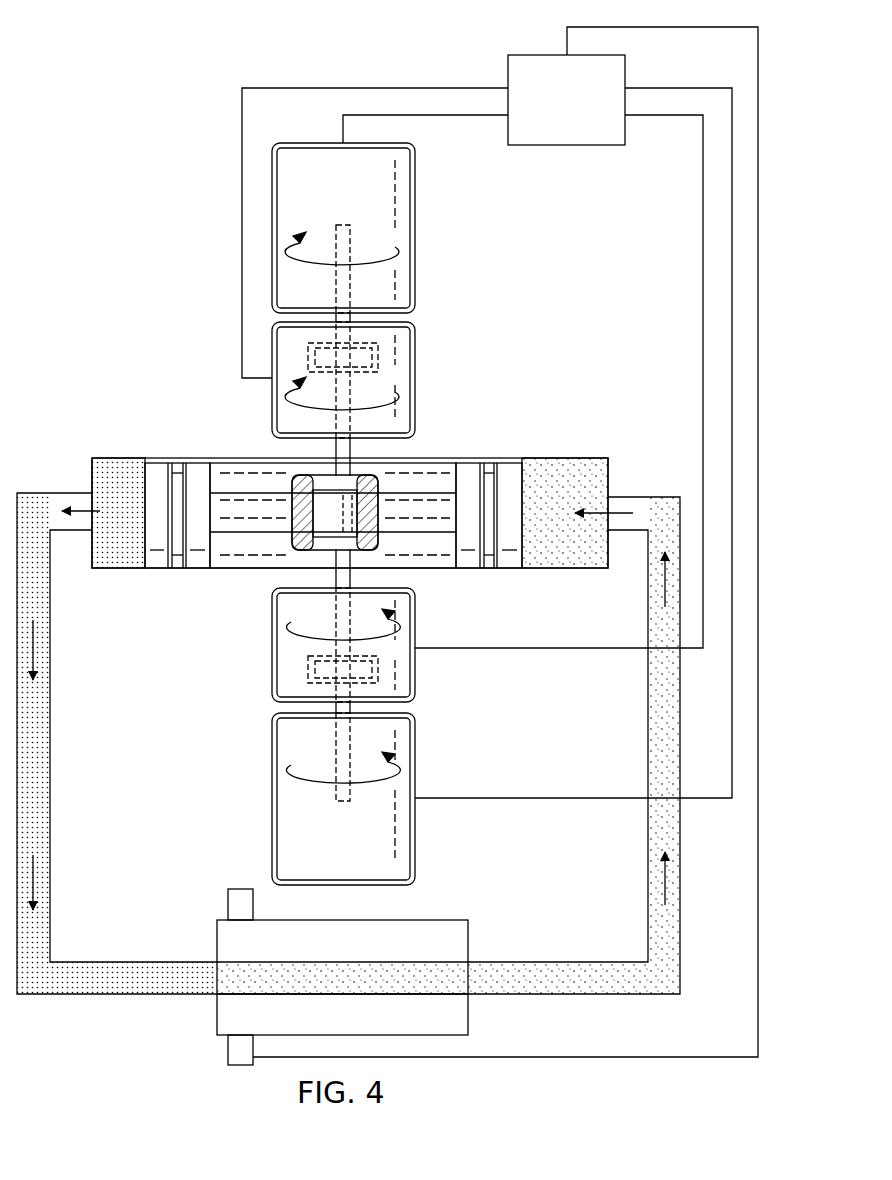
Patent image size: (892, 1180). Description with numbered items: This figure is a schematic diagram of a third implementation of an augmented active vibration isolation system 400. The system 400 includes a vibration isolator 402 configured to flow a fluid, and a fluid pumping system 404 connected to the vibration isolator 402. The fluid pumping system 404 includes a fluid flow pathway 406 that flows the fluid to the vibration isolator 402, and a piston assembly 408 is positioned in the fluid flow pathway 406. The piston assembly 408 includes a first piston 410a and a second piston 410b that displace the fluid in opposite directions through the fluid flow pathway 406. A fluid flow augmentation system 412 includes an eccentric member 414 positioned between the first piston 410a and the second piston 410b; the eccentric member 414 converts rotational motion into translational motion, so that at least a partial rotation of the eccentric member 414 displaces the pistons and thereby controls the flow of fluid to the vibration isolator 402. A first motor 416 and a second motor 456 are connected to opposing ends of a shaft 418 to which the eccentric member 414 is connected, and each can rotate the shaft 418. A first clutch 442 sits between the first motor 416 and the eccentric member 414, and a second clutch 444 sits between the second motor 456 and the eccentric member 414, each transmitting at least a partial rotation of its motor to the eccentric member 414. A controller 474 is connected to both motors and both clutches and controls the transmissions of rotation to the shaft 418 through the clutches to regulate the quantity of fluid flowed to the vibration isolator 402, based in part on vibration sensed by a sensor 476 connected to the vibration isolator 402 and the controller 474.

The augmented active vibration isolation system 400 is at (103, 68).
The vibration isolator 402 is at (447, 920).
The fluid pumping system 404 is at (190, 274).
The fluid flow pathway 406 is at (608, 470).
The piston assembly 408 is at (433, 553).
The first piston 410a is at (438, 463).
The second piston 410b is at (220, 463).
The fluid flow augmentation system 412 is at (578, 426).
The eccentric member 414 is at (328, 522).
The first motor 416 is at (415, 226).
The shaft 418 is at (336, 449).
The first clutch 442 is at (415, 372).
The second clutch 444 is at (415, 694).
The second motor 456 is at (415, 859).
The controller 474 is at (584, 111).
The sensor 476 is at (240, 1066).